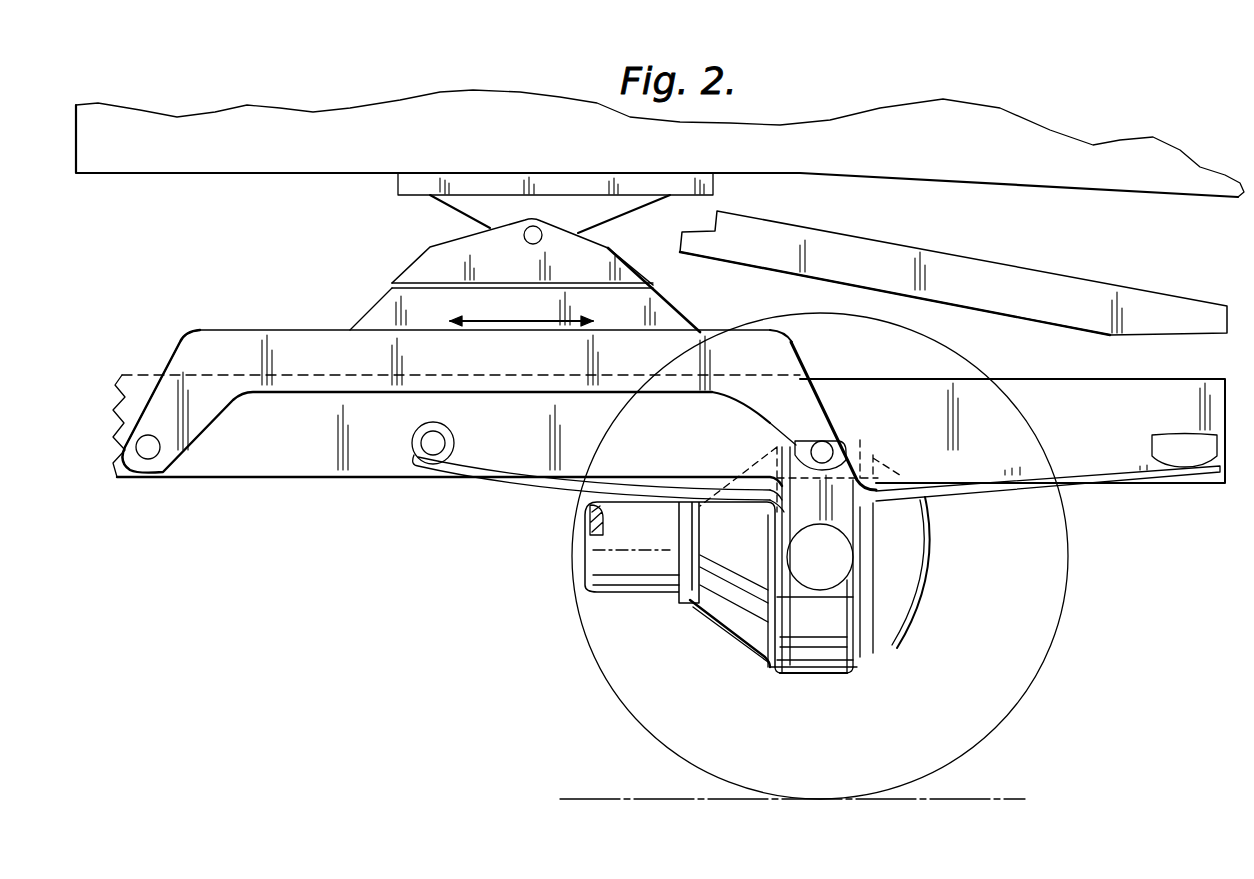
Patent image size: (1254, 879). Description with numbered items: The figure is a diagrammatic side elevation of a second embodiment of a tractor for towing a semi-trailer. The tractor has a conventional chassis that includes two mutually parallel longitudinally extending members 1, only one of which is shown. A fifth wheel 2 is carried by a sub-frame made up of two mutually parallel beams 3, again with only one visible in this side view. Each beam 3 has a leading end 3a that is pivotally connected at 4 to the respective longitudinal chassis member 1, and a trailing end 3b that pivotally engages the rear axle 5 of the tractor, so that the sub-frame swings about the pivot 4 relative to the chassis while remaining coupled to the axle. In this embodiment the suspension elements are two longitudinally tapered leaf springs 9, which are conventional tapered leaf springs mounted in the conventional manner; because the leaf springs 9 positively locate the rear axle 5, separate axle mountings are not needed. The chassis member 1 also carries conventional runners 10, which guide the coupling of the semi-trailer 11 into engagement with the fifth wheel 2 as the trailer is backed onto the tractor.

The longitudinally extending chassis member 1 is at (1222, 384).
The fifth wheel 2 is at (408, 233).
The beam 3 is at (718, 330).
The leading end 3a is at (213, 340).
The trailing end 3b is at (817, 426).
The pivotal connection 4 is at (148, 455).
The rear axle 5 is at (788, 558).
The longitudinally tapered leaf spring 9 is at (482, 475).
The runner 10 is at (920, 251).
The semi-trailer 11 is at (580, 143).